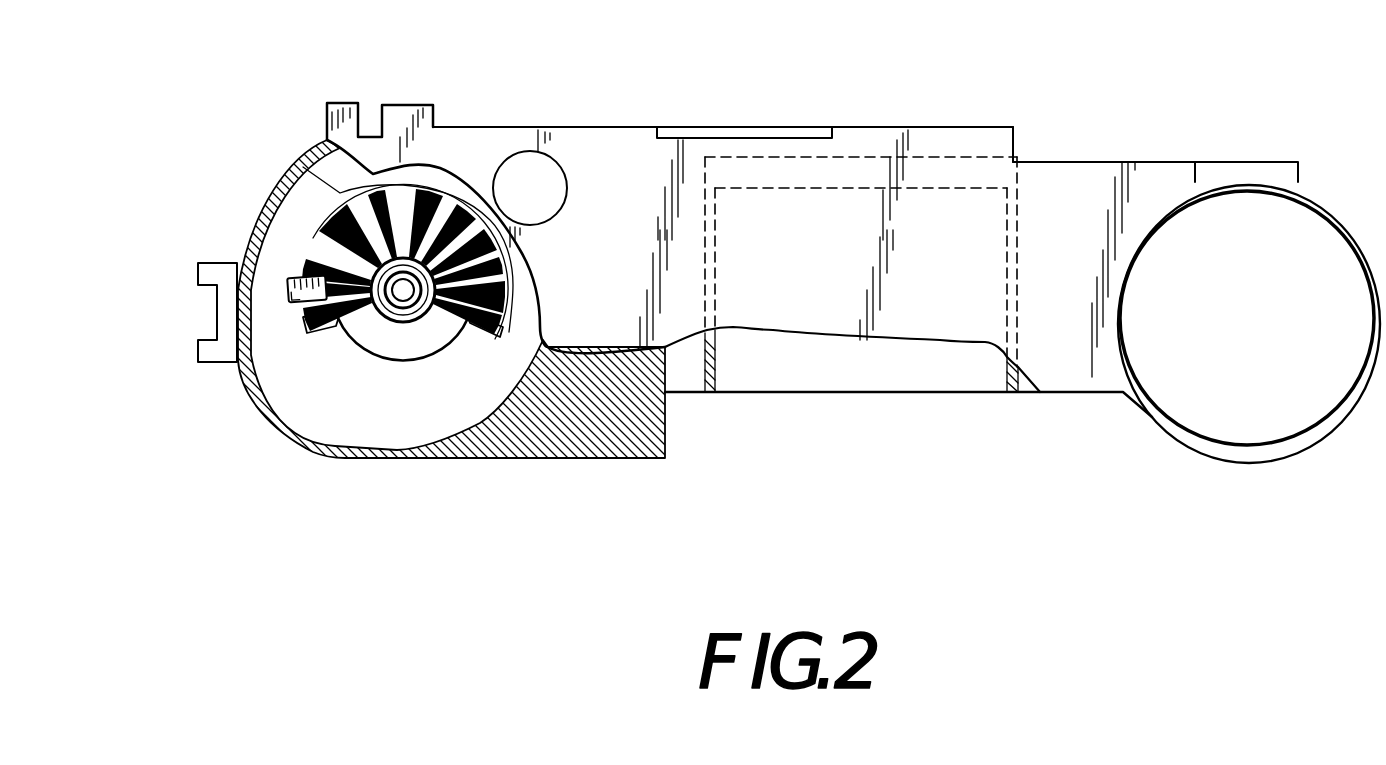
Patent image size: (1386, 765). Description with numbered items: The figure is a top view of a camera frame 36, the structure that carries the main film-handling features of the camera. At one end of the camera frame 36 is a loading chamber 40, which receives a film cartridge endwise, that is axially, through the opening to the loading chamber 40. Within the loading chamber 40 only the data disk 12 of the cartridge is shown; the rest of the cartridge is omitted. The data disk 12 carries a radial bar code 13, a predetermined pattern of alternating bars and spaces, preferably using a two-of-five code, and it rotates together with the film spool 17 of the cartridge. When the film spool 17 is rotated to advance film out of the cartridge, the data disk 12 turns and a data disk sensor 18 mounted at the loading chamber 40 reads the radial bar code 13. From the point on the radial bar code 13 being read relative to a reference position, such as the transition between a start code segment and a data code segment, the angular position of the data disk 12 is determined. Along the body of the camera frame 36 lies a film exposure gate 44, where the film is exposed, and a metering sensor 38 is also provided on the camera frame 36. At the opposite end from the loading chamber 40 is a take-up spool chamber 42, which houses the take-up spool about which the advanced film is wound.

The data disk 12 is at (375, 175).
The radial bar code 13 is at (422, 192).
The film spool 17 is at (292, 168).
The data disk sensor 18 is at (289, 277).
The camera frame 36 is at (915, 430).
The metering sensor 38 is at (1013, 128).
The loading chamber 40 is at (327, 443).
The take-up spool chamber 42 is at (1293, 427).
The film exposure gate 44 is at (863, 157).